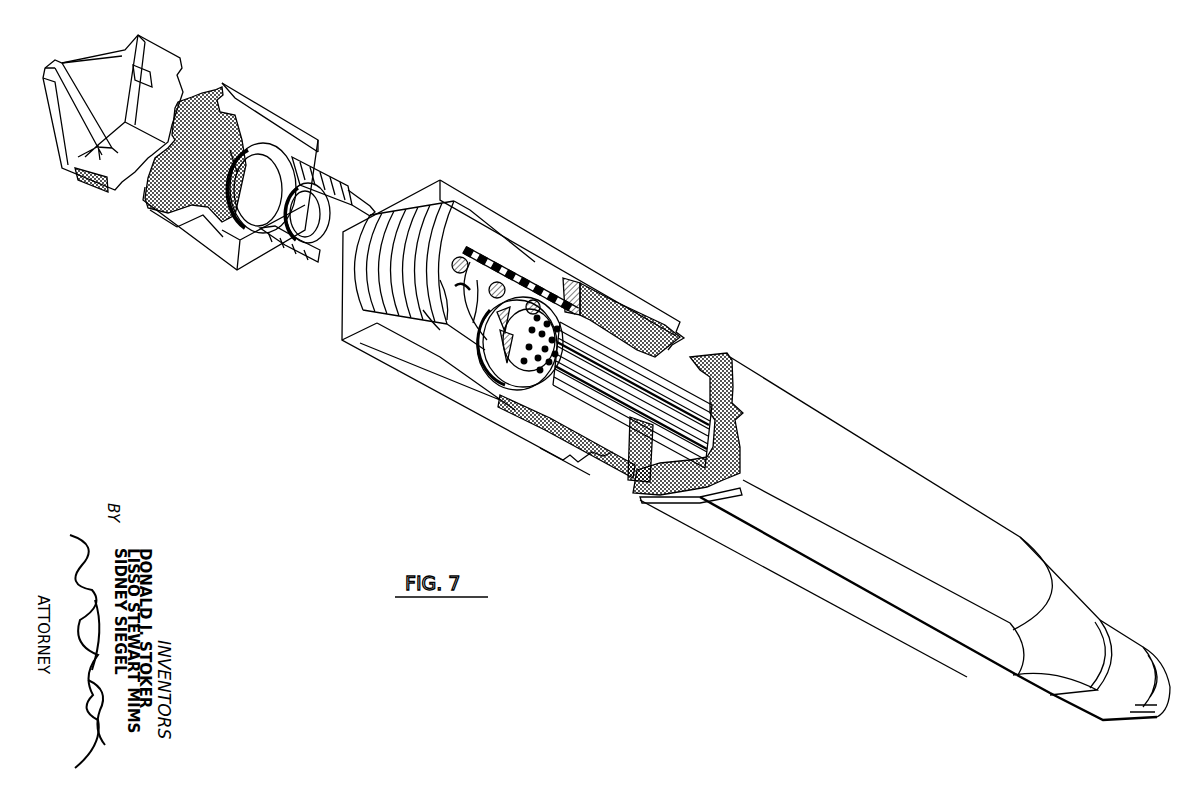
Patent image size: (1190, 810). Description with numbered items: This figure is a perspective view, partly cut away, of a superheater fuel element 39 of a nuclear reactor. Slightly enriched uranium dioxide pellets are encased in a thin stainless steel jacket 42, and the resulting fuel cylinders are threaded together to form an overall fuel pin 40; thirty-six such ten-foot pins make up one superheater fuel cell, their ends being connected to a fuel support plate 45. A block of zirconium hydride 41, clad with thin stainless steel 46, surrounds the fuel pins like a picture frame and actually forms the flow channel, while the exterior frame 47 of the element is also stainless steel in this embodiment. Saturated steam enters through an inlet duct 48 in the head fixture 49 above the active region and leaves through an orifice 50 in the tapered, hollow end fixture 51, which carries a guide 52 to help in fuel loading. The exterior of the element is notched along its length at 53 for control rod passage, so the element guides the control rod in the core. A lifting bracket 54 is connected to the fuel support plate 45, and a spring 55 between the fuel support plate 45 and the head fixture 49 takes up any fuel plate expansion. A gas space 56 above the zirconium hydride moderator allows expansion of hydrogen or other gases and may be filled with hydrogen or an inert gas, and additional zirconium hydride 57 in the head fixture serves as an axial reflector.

The optical assembly 39 is at (548, 476).
The fuel pin 40 is at (636, 418).
The zirconium hydride block 41 is at (700, 490).
The stainless steel jacket 42 is at (623, 410).
The fuel support plate 45 is at (530, 373).
The stainless steel cladding 46 is at (670, 487).
The exterior frame 47 is at (867, 573).
The inlet duct 48 is at (243, 240).
The head fixture 49 is at (123, 165).
The orifice 50 is at (1153, 677).
The end fixture 51 is at (1097, 690).
The guide 52 is at (1173, 693).
The notch 53 is at (337, 320).
The lifting bracket 54 is at (470, 360).
The spring 55 is at (313, 233).
The gas space 56 is at (527, 277).
The additional zirconium hydride 57 is at (207, 187).